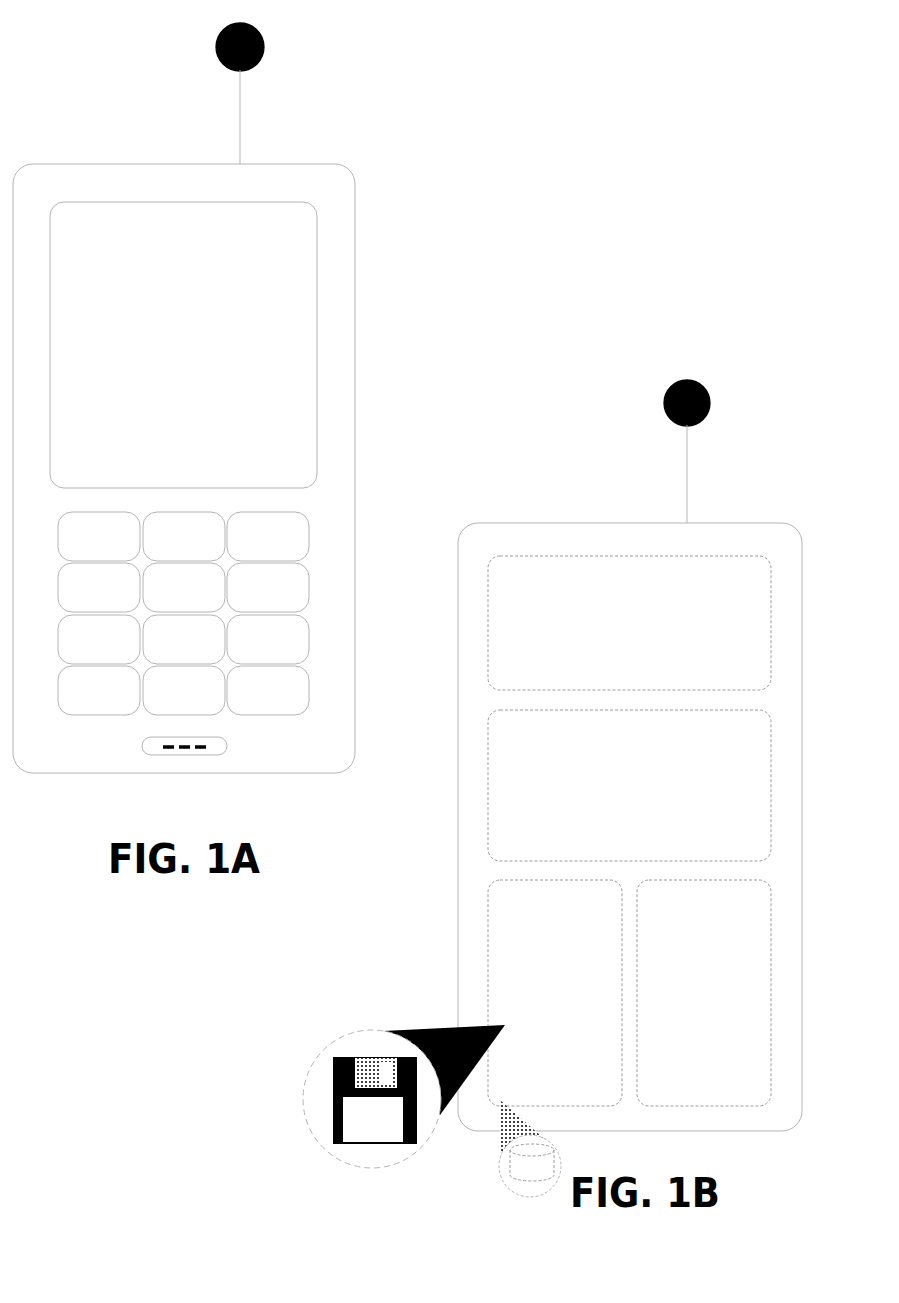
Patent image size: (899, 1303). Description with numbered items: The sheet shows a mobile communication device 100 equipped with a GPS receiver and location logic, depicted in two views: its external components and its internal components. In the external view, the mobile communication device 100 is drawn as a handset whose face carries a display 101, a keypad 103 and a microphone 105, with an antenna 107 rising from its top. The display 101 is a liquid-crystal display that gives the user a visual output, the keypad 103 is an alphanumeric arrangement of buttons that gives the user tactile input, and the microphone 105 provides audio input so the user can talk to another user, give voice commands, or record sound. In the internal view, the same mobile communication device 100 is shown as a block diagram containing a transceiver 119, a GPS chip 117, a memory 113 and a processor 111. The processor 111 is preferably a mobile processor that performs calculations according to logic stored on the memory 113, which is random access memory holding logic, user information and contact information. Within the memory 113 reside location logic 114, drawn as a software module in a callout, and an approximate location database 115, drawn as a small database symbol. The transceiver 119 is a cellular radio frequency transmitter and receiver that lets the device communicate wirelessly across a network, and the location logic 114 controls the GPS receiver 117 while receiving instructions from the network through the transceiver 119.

In FIG. 1A, the mobile communication device 100 is at (184, 433).
In FIG. 1A, the display 101 is at (264, 328).
In FIG. 1A, the keypad 103 is at (262, 575).
In FIG. 1A, the microphone 105 is at (122, 780).
In FIG. 1A, the antenna 107 is at (310, 93).
In FIG. 1B, the processor (CPU) 111 is at (686, 1108).
In FIG. 1B, the memory 113 is at (490, 973).
In FIG. 1B, the location logic 114 is at (337, 1096).
In FIG. 1B, the approximate location database 115 is at (532, 1182).
In FIG. 1B, the GPS chip 117 is at (573, 784).
In FIG. 1B, the transceiver 119 is at (629, 582).